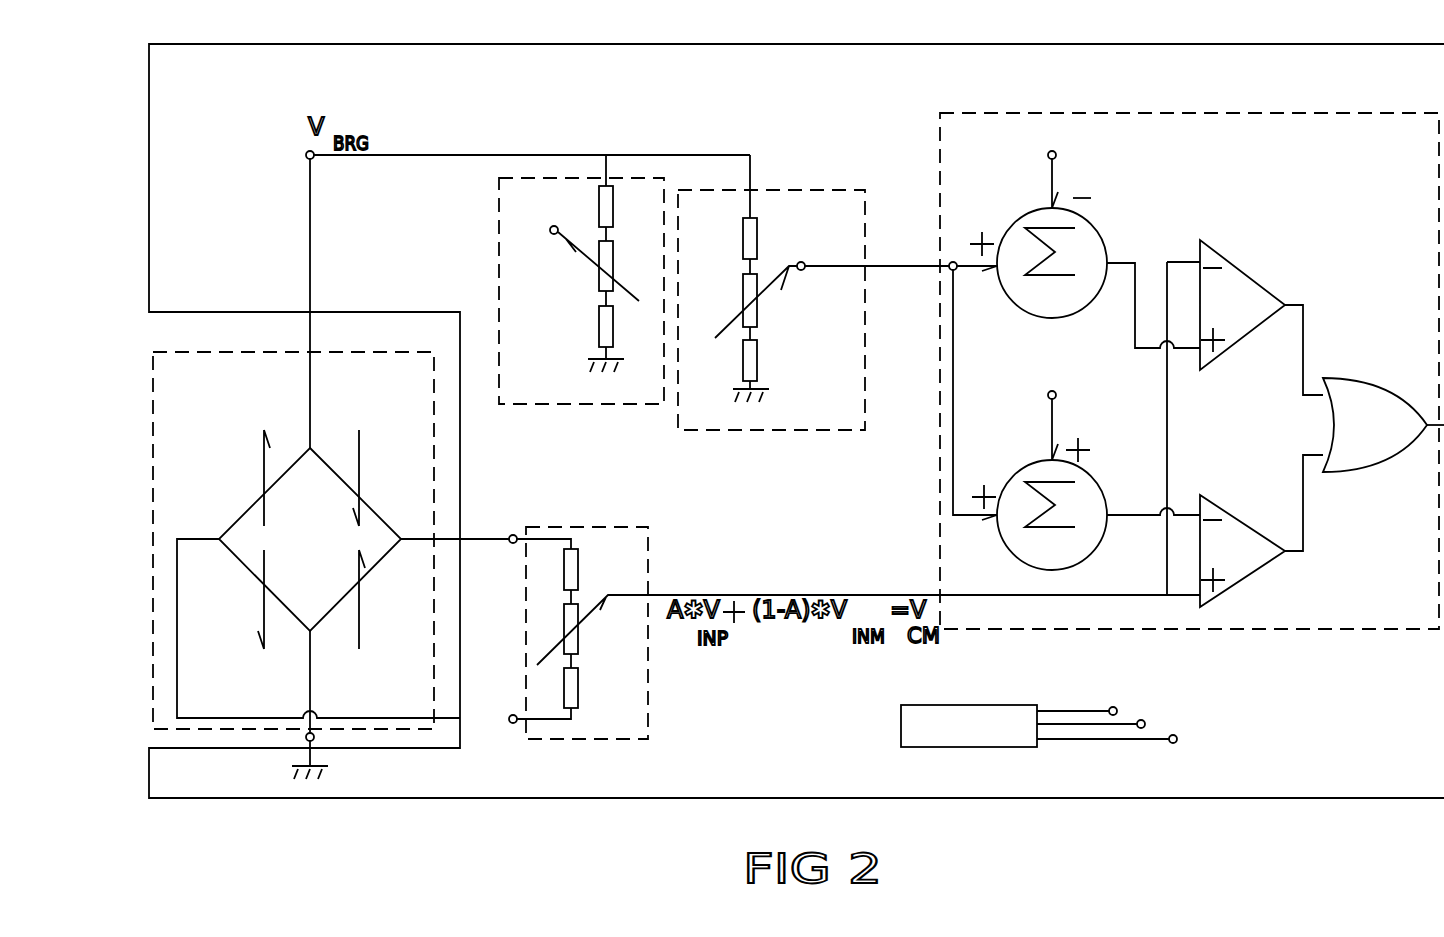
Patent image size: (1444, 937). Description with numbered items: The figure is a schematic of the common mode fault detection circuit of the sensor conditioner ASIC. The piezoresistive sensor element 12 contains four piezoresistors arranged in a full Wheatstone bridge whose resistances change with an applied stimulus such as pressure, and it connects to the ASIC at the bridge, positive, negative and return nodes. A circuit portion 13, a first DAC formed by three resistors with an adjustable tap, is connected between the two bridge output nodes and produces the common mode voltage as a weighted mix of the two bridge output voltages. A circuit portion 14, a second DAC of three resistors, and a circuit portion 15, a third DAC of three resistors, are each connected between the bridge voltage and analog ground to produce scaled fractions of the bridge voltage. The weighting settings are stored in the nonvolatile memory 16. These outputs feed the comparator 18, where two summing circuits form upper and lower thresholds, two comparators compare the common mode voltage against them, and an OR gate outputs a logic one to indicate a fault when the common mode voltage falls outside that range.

The piezoresistive sensor element 12 is at (268, 350).
The circuit portion 13 is at (651, 541).
The circuit portion 14 is at (793, 186).
The circuit portion 15 is at (494, 244).
The nonvolatile memory 16 is at (897, 723).
The comparator 18 is at (1300, 632).